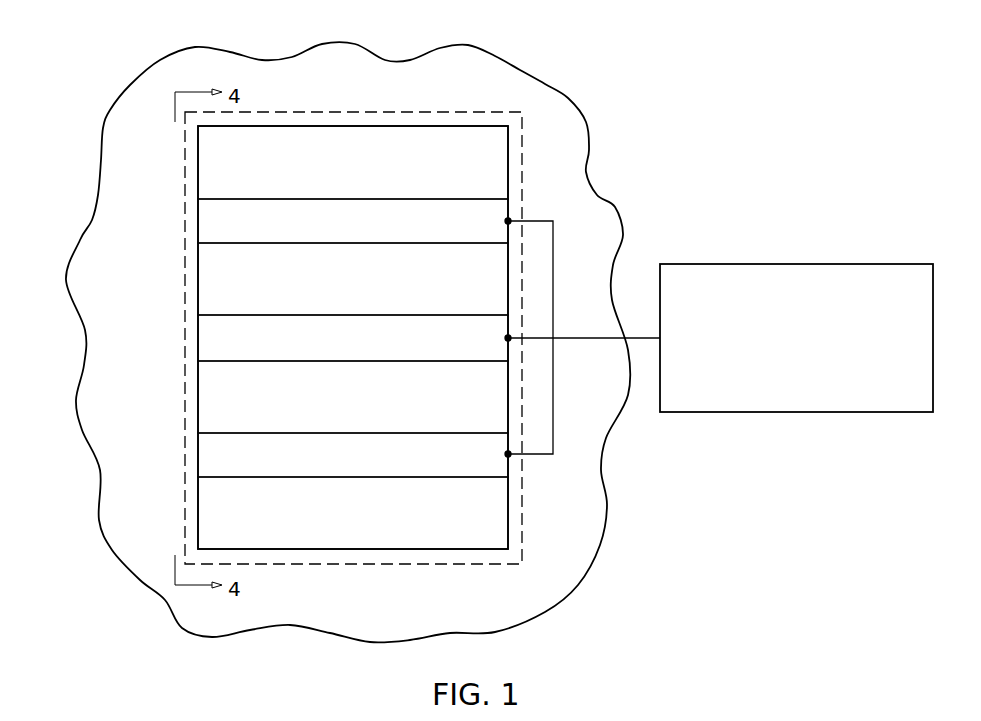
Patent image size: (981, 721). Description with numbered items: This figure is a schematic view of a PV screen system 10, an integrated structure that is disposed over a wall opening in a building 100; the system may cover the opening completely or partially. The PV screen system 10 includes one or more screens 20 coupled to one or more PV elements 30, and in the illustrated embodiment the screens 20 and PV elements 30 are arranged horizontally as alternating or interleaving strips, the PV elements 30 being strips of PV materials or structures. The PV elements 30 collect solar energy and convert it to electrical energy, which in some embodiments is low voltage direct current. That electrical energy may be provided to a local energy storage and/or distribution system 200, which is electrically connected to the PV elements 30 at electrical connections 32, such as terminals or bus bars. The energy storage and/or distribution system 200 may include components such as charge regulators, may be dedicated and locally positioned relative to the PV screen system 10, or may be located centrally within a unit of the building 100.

The building 100 is at (487, 80).
The PV screen system 10 is at (280, 568).
The screen 20 is at (232, 283).
The PV element 30 is at (218, 220).
The electrical connection 32 is at (508, 221).
The energy storage and/or distribution system 200 is at (808, 264).